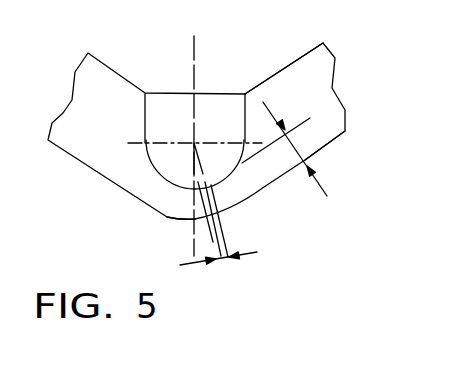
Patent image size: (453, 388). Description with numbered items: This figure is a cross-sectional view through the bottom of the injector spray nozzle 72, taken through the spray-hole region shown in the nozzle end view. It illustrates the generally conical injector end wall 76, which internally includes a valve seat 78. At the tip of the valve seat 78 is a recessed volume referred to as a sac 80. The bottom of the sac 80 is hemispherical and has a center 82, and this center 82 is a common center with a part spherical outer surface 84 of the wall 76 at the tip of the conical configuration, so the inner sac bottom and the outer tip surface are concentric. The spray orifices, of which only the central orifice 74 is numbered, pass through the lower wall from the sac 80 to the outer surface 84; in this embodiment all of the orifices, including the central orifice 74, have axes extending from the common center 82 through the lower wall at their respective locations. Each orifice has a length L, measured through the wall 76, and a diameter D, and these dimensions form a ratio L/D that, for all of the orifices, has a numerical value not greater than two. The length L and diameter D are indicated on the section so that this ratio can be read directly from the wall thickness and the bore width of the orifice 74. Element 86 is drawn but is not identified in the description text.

The spray nozzle 72 is at (352, 76).
The center hole 74 is at (216, 199).
The injector end wall 76 is at (323, 155).
The valve seat 78 is at (290, 62).
The sac 80 is at (213, 107).
The center 82 is at (195, 144).
The part spherical outer surface 84 is at (174, 219).
The notch 86 is at (204, 162).
The orifice length L is at (299, 158).
The orifice diameter D is at (218, 262).